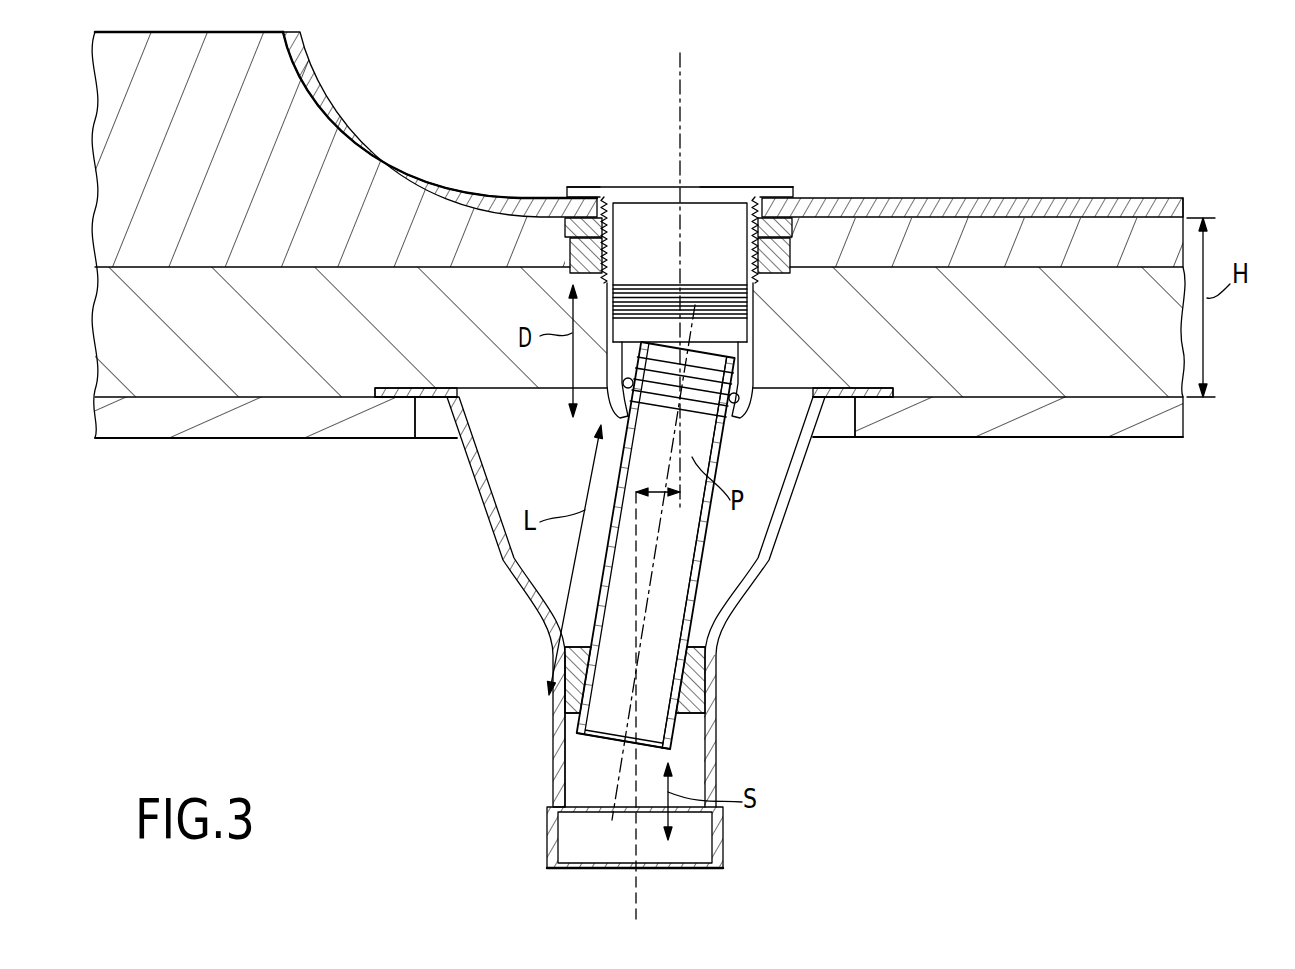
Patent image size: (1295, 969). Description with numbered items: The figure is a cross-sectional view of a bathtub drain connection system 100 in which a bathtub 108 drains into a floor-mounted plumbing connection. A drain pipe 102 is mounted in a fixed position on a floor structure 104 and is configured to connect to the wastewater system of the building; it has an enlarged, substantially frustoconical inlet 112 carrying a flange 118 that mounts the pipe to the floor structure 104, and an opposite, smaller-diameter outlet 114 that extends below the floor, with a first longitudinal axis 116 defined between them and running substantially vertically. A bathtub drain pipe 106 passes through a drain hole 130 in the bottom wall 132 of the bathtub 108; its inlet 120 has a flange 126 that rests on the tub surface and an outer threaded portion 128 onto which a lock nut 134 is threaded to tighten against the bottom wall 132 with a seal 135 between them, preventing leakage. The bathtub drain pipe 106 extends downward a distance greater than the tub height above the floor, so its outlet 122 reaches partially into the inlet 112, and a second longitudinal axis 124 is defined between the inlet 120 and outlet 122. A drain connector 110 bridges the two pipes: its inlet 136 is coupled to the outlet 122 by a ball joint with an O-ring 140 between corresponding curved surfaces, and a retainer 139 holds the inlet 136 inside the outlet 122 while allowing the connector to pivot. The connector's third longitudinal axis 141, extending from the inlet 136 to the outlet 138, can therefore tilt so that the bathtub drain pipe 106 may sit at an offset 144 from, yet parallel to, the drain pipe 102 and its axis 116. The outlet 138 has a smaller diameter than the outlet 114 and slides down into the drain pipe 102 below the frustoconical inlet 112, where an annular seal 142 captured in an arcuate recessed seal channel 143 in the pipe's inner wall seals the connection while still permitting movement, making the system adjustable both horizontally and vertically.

The bathtub drain connection system 100 is at (1103, 157).
The drain pipe 102 is at (553, 707).
The floor structure 104 is at (1078, 440).
The bathtub drain pipe 106 is at (637, 195).
The bathtub 108 is at (948, 199).
The drain connector 110 is at (700, 603).
The inlet 112 is at (468, 460).
The outlet 114 is at (547, 832).
The first longitudinal axis 116 is at (636, 893).
The flange 118 is at (404, 398).
The inlet 120 is at (727, 192).
The outlet 122 is at (752, 365).
The second longitudinal axis 124 is at (680, 100).
The flange 126 is at (572, 187).
The outer threaded portion 128 is at (760, 290).
The drain hole 130 is at (795, 208).
The bottom wall 132 is at (1160, 210).
The lock nut 134 is at (790, 247).
The seal 135 is at (565, 232).
The inlet 136 is at (707, 463).
The outlet 138 is at (673, 740).
The retainer 139 is at (748, 342).
The O-ring 140 is at (740, 410).
The third longitudinal axis 141 is at (620, 767).
The seal 142 is at (697, 690).
The recessed seal channel 143 is at (700, 657).
The offset 144 is at (657, 494).